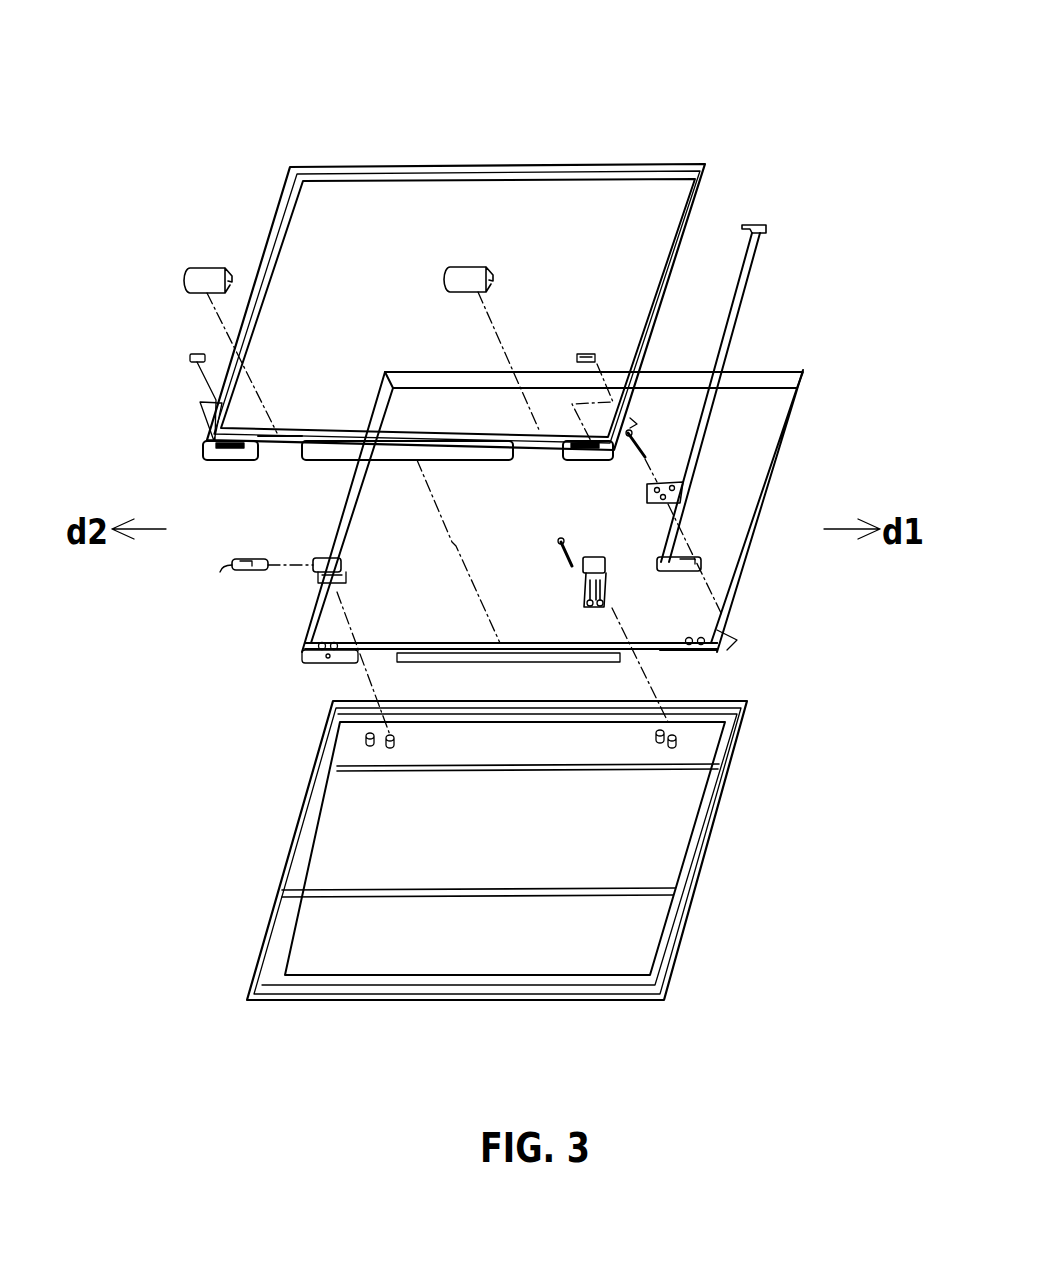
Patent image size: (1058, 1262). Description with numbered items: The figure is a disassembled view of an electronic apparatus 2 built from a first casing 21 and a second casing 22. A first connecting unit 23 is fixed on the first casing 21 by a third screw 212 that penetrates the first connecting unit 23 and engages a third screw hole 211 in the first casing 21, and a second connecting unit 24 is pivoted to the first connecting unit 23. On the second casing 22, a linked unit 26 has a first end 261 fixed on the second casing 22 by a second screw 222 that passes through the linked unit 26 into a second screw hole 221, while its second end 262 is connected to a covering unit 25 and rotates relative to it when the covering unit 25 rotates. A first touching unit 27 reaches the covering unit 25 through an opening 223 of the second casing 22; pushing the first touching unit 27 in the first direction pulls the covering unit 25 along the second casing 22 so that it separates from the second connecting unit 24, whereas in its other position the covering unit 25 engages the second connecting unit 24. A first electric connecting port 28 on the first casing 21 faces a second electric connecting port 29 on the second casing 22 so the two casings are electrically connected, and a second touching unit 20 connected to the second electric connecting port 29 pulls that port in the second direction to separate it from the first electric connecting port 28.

The electronic apparatus 2 is at (842, 61).
The second touching unit 20 is at (190, 357).
The first casing 21 is at (542, 850).
The third screw hole 211 is at (677, 742).
The third screw 212 is at (563, 543).
The second casing 22 is at (885, 305).
The second screw hole 221 is at (717, 648).
The second screw 222 is at (648, 452).
The opening 223 is at (630, 418).
The first connecting unit 23 is at (703, 663).
The second connecting unit 24 is at (617, 567).
The covering unit 25 is at (665, 563).
The linked unit 26 is at (744, 373).
The first end 261 is at (752, 229).
The second end 262 is at (683, 494).
The first touching unit 27 is at (597, 358).
The first electric connecting port 28 is at (317, 580).
The second electric connecting port 29 is at (253, 568).